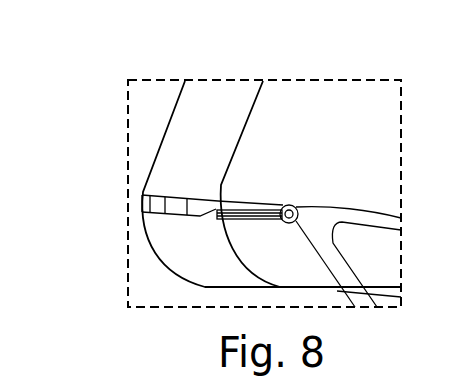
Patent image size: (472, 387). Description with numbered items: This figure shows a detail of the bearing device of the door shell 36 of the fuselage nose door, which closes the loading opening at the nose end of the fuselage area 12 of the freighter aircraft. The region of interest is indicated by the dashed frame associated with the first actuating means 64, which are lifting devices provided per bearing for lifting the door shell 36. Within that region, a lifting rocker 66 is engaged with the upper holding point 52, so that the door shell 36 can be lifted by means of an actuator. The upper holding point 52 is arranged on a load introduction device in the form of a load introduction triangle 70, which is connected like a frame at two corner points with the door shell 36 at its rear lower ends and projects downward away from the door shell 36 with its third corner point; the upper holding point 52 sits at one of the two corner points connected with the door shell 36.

The fuselage area 12 is at (160, 100).
The door shell 36 is at (322, 100).
The first actuating means 64 is at (108, 193).
The lifting rocker 66 is at (178, 211).
The upper holding point 52 is at (300, 202).
The load introduction triangle 70 is at (355, 206).